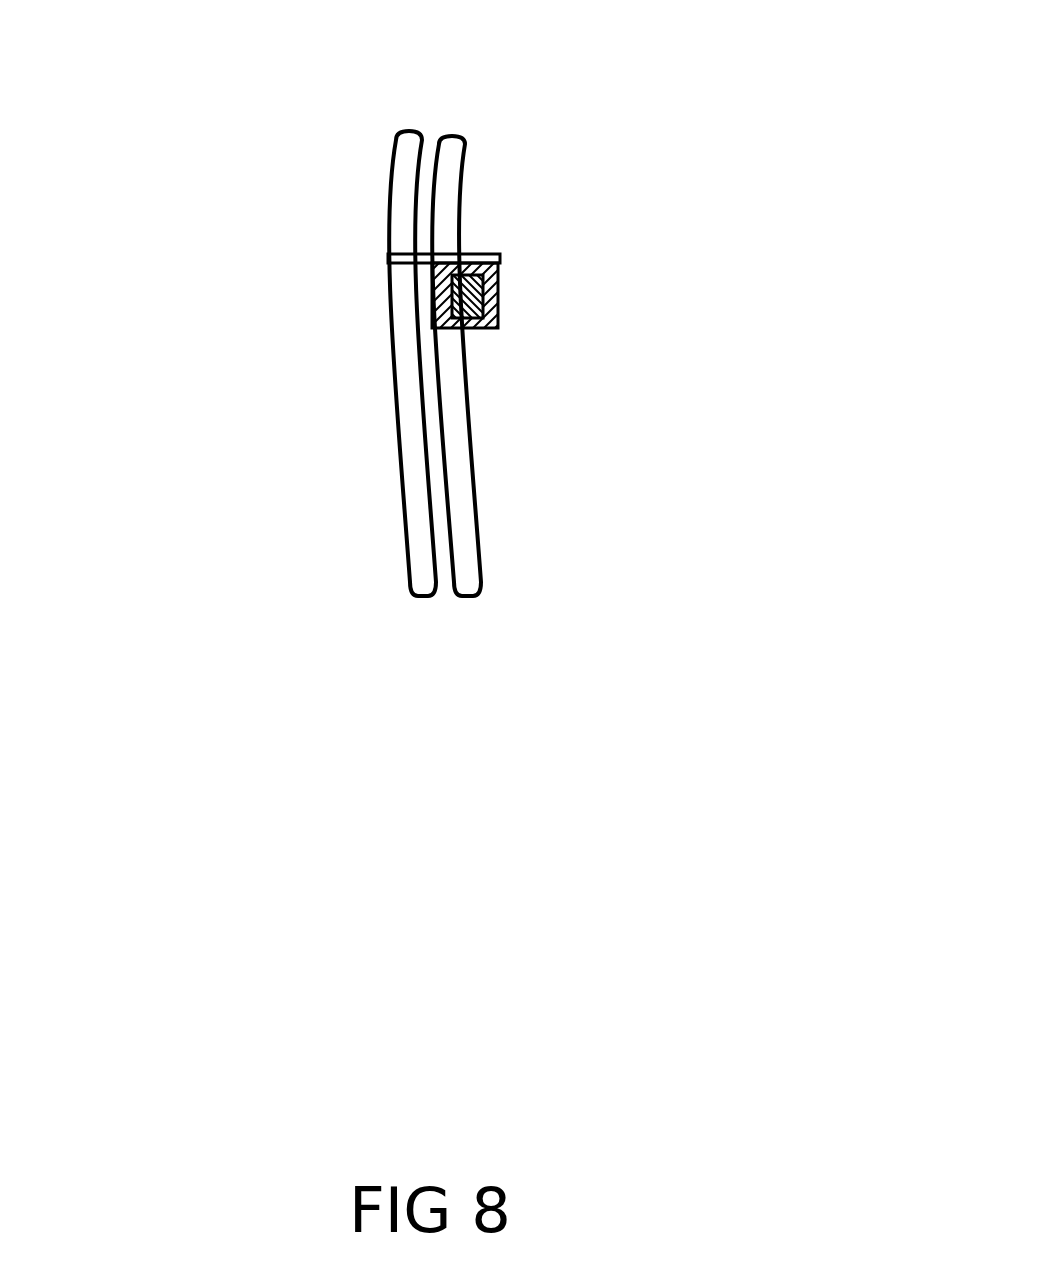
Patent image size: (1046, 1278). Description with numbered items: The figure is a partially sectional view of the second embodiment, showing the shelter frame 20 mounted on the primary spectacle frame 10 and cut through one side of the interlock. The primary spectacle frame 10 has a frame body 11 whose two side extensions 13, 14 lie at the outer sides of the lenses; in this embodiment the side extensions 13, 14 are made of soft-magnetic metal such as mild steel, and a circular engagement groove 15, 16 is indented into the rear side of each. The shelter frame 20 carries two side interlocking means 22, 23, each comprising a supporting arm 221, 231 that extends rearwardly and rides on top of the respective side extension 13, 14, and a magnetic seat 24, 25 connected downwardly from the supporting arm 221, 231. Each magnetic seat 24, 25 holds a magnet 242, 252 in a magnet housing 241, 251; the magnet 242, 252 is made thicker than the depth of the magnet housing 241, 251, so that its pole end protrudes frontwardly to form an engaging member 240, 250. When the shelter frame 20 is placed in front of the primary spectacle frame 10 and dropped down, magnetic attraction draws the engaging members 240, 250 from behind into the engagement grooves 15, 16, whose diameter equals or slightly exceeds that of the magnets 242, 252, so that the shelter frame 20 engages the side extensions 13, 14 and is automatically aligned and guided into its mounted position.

The primary spectacle frame 10 is at (482, 363).
The frame body 11 is at (467, 542).
The shelter frame 20 is at (347, 373).
The side extension 13 is at (256, 276).
The side extension 14 is at (256, 276).
The engagement groove 15 is at (254, 374).
The engagement groove 16 is at (254, 374).
The side interlocking means 22 is at (483, 280).
The side interlocking means 23 is at (513, 240).
The supporting arm 221 is at (631, 142).
The supporting arm 231 is at (482, 255).
The magnetic seat 24 is at (483, 390).
The magnetic seat 25 is at (483, 390).
The magnet housing 241 is at (654, 280).
The magnet housing 251 is at (654, 280).
The magnet 242 is at (694, 418).
The magnet 252 is at (694, 418).
The engaging member 240 is at (254, 433).
The engaging member 250 is at (254, 433).